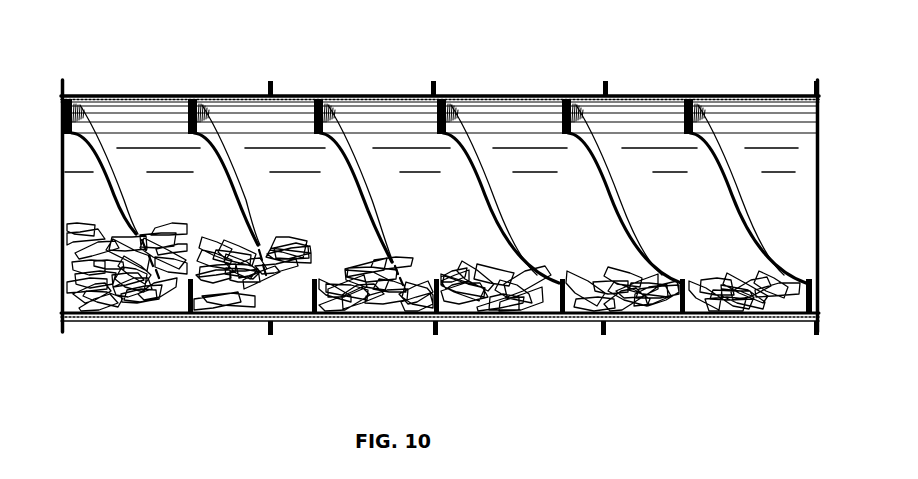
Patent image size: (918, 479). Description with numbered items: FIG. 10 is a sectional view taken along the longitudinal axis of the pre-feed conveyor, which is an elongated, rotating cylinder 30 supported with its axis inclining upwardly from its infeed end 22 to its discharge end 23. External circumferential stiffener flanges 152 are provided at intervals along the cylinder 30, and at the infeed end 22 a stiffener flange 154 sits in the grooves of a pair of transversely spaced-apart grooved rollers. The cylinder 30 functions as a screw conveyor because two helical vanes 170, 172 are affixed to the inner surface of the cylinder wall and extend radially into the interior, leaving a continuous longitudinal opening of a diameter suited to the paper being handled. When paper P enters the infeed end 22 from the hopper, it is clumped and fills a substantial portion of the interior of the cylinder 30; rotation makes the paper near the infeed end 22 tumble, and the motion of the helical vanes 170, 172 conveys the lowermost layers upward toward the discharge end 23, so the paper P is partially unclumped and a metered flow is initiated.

The infeed end 22 is at (62, 107).
The discharge end 23 is at (820, 115).
The cylinder 30 is at (647, 96).
The helical vane 170 is at (93, 99).
The helical vane 172 is at (213, 100).
The stiffener flange 152 is at (268, 322).
The stiffener flange 154 is at (58, 322).
The paper P is at (83, 230).